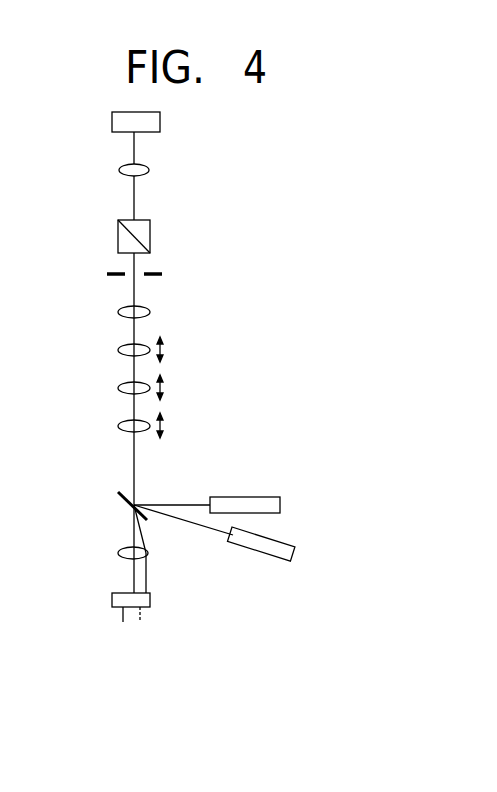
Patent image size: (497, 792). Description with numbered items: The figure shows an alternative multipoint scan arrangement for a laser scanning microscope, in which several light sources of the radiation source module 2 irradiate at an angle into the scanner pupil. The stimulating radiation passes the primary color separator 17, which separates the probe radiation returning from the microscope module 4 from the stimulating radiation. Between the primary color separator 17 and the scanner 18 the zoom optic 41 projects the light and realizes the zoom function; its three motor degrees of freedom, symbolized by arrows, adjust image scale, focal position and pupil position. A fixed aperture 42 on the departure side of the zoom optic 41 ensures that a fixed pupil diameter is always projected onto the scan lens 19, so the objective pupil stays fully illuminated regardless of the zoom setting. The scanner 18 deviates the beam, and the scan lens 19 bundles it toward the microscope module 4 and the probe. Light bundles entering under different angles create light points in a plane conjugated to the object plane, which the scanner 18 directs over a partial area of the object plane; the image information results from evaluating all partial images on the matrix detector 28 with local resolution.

The microscope module 4 is at (160, 121).
The scan lens 19 is at (142, 166).
The scanner 18 is at (118, 232).
The fixed aperture 42 is at (150, 273).
The zoom optic 41 is at (212, 297).
The primary color separator 17 is at (120, 502).
The radiation source module 2 is at (329, 526).
The matrix detector 28 is at (112, 600).